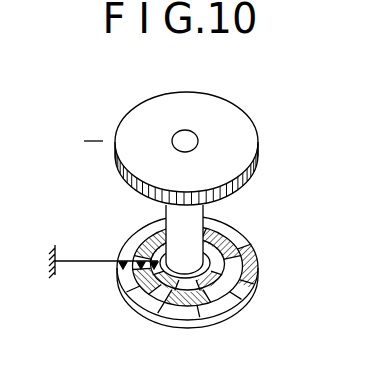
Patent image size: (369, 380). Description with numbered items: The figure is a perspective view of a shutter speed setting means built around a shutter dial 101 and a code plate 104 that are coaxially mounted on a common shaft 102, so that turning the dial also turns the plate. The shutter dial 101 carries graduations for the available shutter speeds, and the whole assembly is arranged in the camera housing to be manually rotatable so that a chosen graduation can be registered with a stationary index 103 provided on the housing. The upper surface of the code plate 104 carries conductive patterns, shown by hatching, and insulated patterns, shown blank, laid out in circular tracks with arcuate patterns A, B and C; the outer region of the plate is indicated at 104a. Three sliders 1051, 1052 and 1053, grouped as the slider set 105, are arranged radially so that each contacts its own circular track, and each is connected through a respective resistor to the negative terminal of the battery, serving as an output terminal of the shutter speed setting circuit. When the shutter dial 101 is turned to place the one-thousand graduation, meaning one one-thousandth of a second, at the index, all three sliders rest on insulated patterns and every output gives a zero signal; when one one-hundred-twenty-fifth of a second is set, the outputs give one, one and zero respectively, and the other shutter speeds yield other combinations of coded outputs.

The shutter dial 101 is at (257, 139).
The common shaft 102 is at (185, 139).
The stationary index 103 is at (93, 141).
The code plate 104 is at (183, 322).
The outer portion of base 104a is at (237, 294).
The contact brush assembly 105 is at (61, 281).
The first slider 1051 is at (122, 263).
The second slider 1052 is at (141, 271).
The third slider 1053 is at (154, 272).
The arcuate pattern A is at (250, 242).
The arcuate pattern B is at (222, 247).
The arcuate pattern C is at (218, 228).